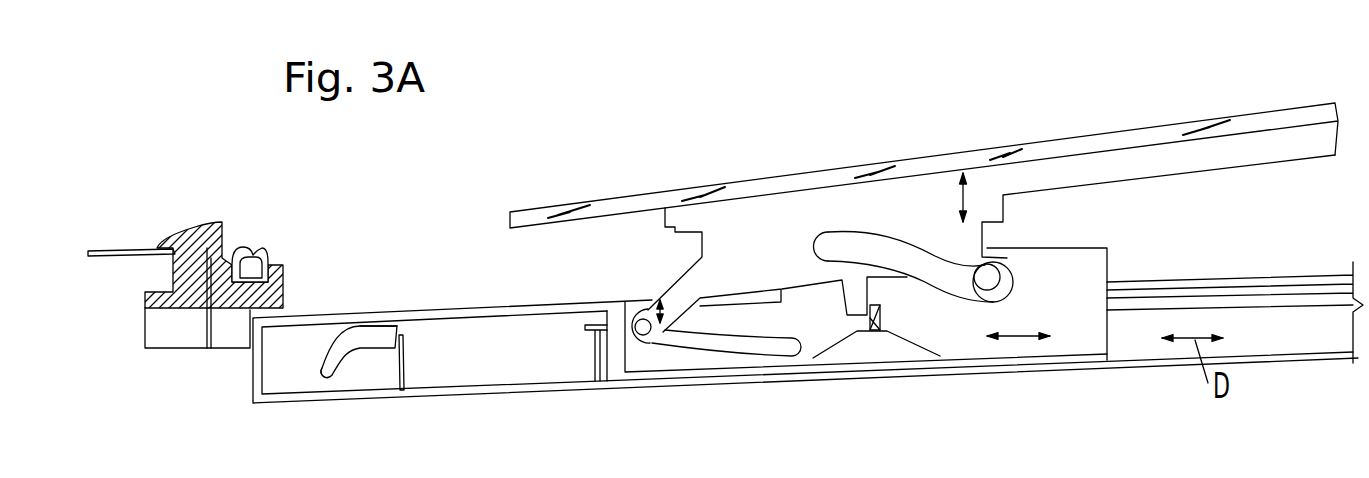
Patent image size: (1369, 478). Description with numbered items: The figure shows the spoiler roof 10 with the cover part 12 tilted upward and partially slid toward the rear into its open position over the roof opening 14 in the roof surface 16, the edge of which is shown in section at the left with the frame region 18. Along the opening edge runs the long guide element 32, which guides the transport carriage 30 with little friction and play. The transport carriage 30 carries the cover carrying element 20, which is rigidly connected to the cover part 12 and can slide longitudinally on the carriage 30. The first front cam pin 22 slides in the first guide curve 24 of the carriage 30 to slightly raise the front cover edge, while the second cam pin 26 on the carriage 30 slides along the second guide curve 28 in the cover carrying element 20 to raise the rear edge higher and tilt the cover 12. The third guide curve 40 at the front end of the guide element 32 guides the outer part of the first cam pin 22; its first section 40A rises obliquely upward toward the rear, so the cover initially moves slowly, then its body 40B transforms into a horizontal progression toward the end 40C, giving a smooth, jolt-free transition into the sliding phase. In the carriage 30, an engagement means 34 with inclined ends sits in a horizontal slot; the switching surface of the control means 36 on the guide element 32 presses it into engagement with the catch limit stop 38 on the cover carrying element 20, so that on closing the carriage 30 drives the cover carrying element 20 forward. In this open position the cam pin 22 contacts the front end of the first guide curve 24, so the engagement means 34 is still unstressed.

The locking device 10 is at (1185, 242).
The cover part 12 is at (1168, 135).
The roof opening 14 is at (383, 252).
The roof surface 16 is at (133, 250).
The housing 18 is at (250, 370).
The cover carrying element 20 is at (987, 200).
The first front cam pin 22 is at (643, 318).
The first guide curve 24 is at (707, 346).
The second cam pin 26 is at (990, 278).
The second guide curve 28 is at (865, 236).
The transport carriage 30 is at (1100, 333).
The guide element 32 is at (480, 345).
The engagement means 34 is at (885, 331).
The control means 36 is at (595, 382).
The catch limit stop 38 is at (872, 330).
The third guide curve 40 is at (352, 349).
The hook tip 40A is at (325, 378).
The hook body 40B is at (370, 336).
The hook stop 40C is at (402, 341).